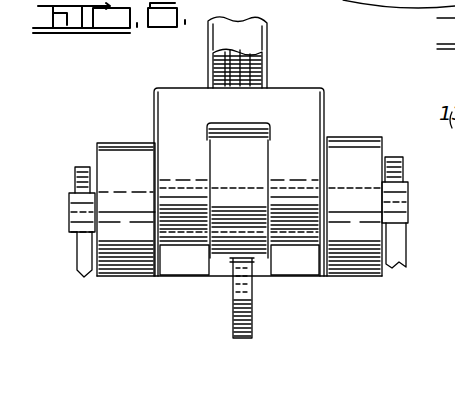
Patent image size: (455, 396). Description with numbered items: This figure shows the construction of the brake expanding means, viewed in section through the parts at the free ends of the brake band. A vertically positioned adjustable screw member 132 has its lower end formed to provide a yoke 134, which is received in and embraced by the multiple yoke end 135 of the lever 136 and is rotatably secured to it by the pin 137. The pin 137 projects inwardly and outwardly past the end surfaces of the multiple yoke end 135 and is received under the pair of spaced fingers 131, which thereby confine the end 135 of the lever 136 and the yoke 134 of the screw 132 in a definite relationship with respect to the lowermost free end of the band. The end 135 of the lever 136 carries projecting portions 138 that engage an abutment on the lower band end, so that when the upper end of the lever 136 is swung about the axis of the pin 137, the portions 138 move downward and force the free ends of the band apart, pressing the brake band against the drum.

The fingers 131 is at (82, 167).
The adjustable screw member 132 is at (238, 68).
The yoke 134 is at (172, 113).
The multiple yoke end 135 is at (345, 148).
The lever 136 is at (210, 46).
The pin 137 is at (392, 200).
The projecting portions 138 is at (185, 238).